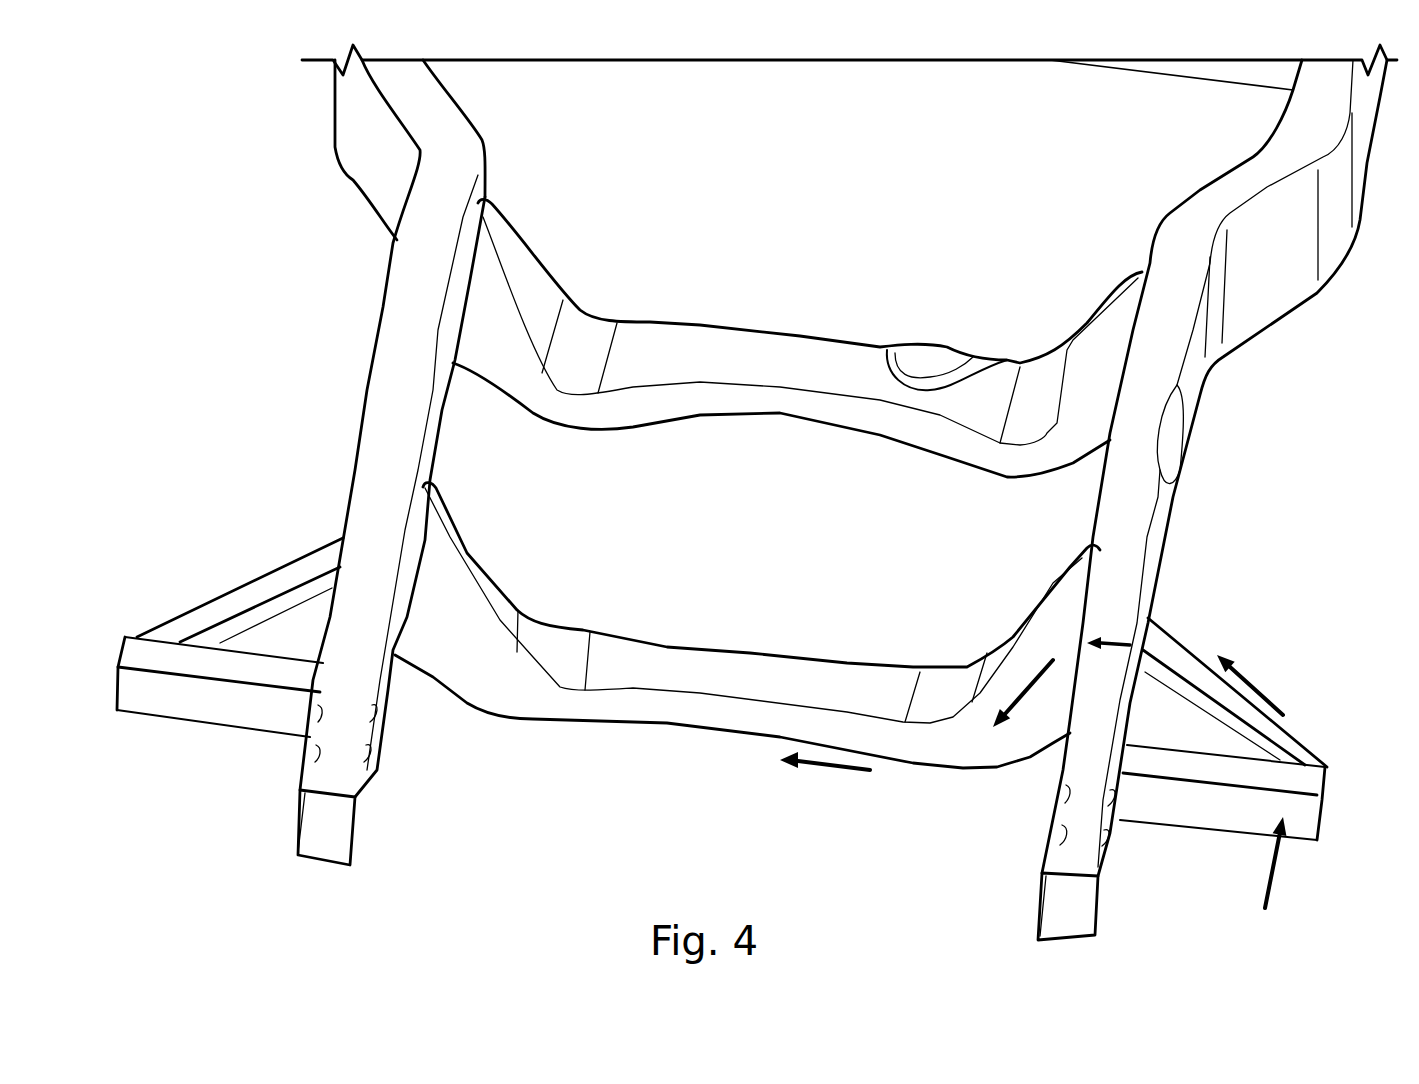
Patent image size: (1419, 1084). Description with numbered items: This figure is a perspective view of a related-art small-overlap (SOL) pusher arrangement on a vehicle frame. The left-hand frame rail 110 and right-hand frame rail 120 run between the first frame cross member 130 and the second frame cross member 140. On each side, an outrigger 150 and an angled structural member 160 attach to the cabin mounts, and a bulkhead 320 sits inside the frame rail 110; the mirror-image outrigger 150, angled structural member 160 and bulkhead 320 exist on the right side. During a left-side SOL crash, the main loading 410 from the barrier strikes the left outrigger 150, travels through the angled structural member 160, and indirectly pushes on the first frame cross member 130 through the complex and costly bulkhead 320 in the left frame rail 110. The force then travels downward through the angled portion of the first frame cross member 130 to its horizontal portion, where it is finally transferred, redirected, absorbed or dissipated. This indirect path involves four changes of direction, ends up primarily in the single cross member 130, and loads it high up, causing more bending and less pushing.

The left-hand frame rail 110 is at (1197, 410).
The right-hand frame rail 120 is at (368, 388).
The No. 1 frame cross member 130 is at (750, 660).
The No. 2 frame cross member 140 is at (828, 350).
The left outrigger 150 is at (210, 728).
The angled structural member 160 is at (240, 588).
The bulkhead 320 is at (370, 513).
The main loading 410 is at (1275, 880).